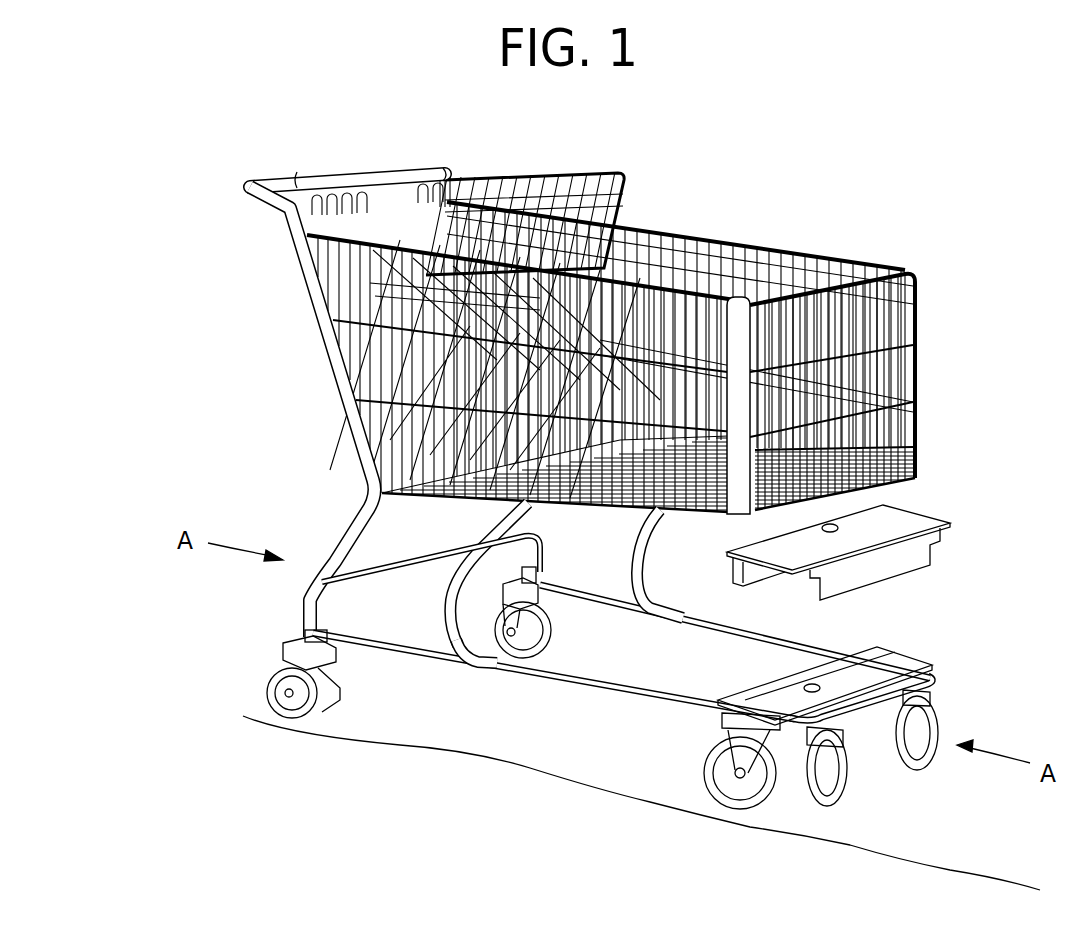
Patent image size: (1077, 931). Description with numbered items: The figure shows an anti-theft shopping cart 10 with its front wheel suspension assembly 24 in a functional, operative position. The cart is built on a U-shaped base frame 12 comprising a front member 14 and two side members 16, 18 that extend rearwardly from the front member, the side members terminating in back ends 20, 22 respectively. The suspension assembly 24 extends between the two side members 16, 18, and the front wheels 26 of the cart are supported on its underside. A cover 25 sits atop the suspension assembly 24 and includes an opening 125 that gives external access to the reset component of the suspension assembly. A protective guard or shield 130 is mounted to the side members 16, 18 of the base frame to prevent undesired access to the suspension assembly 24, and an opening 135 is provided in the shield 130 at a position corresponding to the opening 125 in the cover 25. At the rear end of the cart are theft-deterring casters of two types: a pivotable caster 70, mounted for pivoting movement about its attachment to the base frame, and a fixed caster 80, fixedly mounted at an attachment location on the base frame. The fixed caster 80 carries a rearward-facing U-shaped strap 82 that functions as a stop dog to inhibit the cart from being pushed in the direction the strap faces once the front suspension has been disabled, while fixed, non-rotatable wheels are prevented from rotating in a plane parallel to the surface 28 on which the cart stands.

The shopping cart 10 is at (802, 138).
The base frame 12 is at (578, 683).
The front member 14 is at (870, 710).
The side member 16 is at (710, 618).
The side member 18 is at (650, 694).
The back end 20 is at (546, 575).
The back end 22 is at (350, 632).
The front wheel suspension assembly 24 is at (738, 669).
The cover 25 is at (858, 672).
The front wheels 26 is at (712, 790).
The surface 28 is at (980, 845).
The pivotable caster 70 is at (290, 688).
The fixed caster 80 is at (467, 603).
The U-shaped strap 82 is at (463, 658).
The opening 125 is at (818, 688).
The protective guard or shield 130 is at (905, 520).
The opening 135 is at (908, 562).